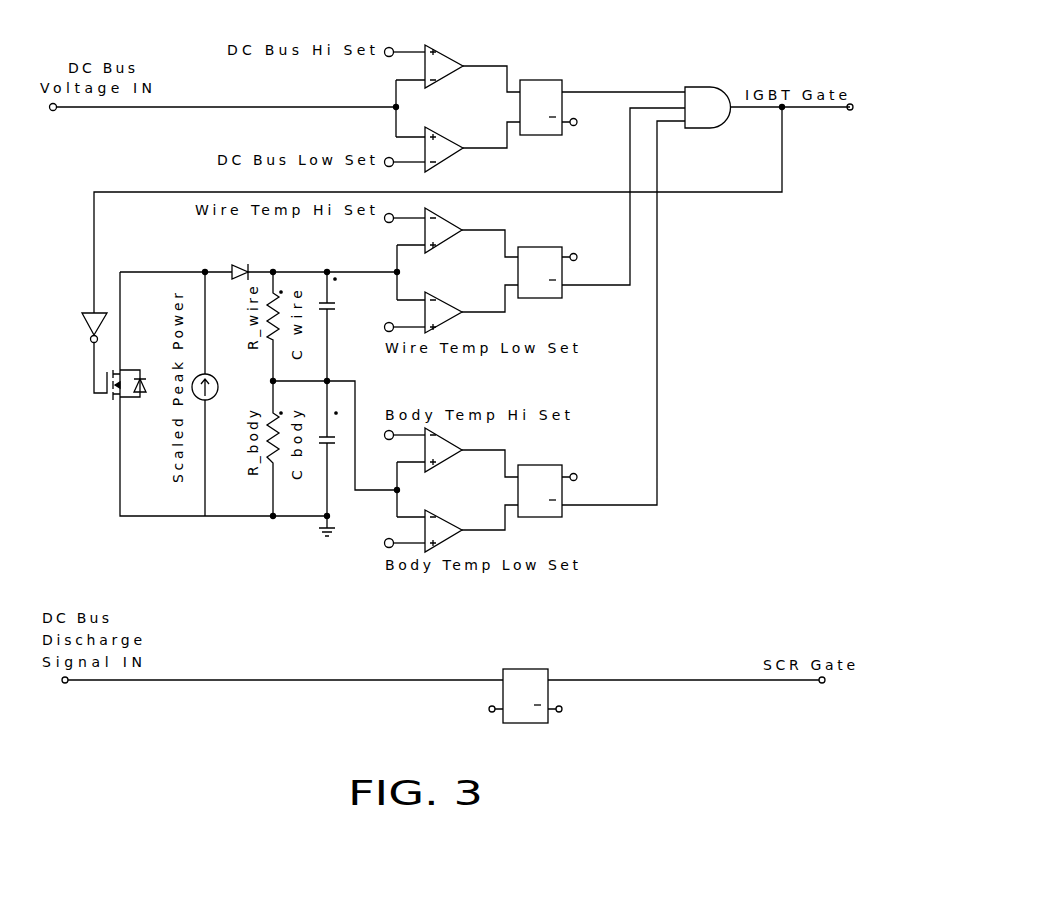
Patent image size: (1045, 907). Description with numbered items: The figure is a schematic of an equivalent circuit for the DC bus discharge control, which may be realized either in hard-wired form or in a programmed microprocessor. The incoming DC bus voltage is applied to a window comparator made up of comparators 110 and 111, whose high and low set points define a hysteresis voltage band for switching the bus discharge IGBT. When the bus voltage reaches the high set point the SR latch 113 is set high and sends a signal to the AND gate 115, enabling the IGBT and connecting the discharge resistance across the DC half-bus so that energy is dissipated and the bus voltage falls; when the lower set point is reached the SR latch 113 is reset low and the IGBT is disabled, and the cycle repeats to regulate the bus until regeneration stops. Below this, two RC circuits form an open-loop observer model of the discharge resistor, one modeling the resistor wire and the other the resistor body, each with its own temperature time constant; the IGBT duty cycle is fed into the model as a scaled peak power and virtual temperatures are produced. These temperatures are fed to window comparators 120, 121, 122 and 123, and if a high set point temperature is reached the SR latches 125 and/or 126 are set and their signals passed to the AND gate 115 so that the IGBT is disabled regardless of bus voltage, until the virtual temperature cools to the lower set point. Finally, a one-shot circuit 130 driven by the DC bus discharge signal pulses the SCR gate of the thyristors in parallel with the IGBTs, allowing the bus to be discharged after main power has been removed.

The comparator 110 is at (448, 52).
The comparator 111 is at (448, 162).
The SR latch 113 is at (558, 80).
The AND gate 115 is at (706, 130).
The window comparator 120 is at (455, 222).
The window comparator 121 is at (455, 305).
The window comparator 122 is at (455, 438).
The window comparator 123 is at (448, 522).
The SR latch 125 is at (548, 300).
The SR latch 126 is at (540, 518).
The one-shot circuit 130 is at (548, 667).